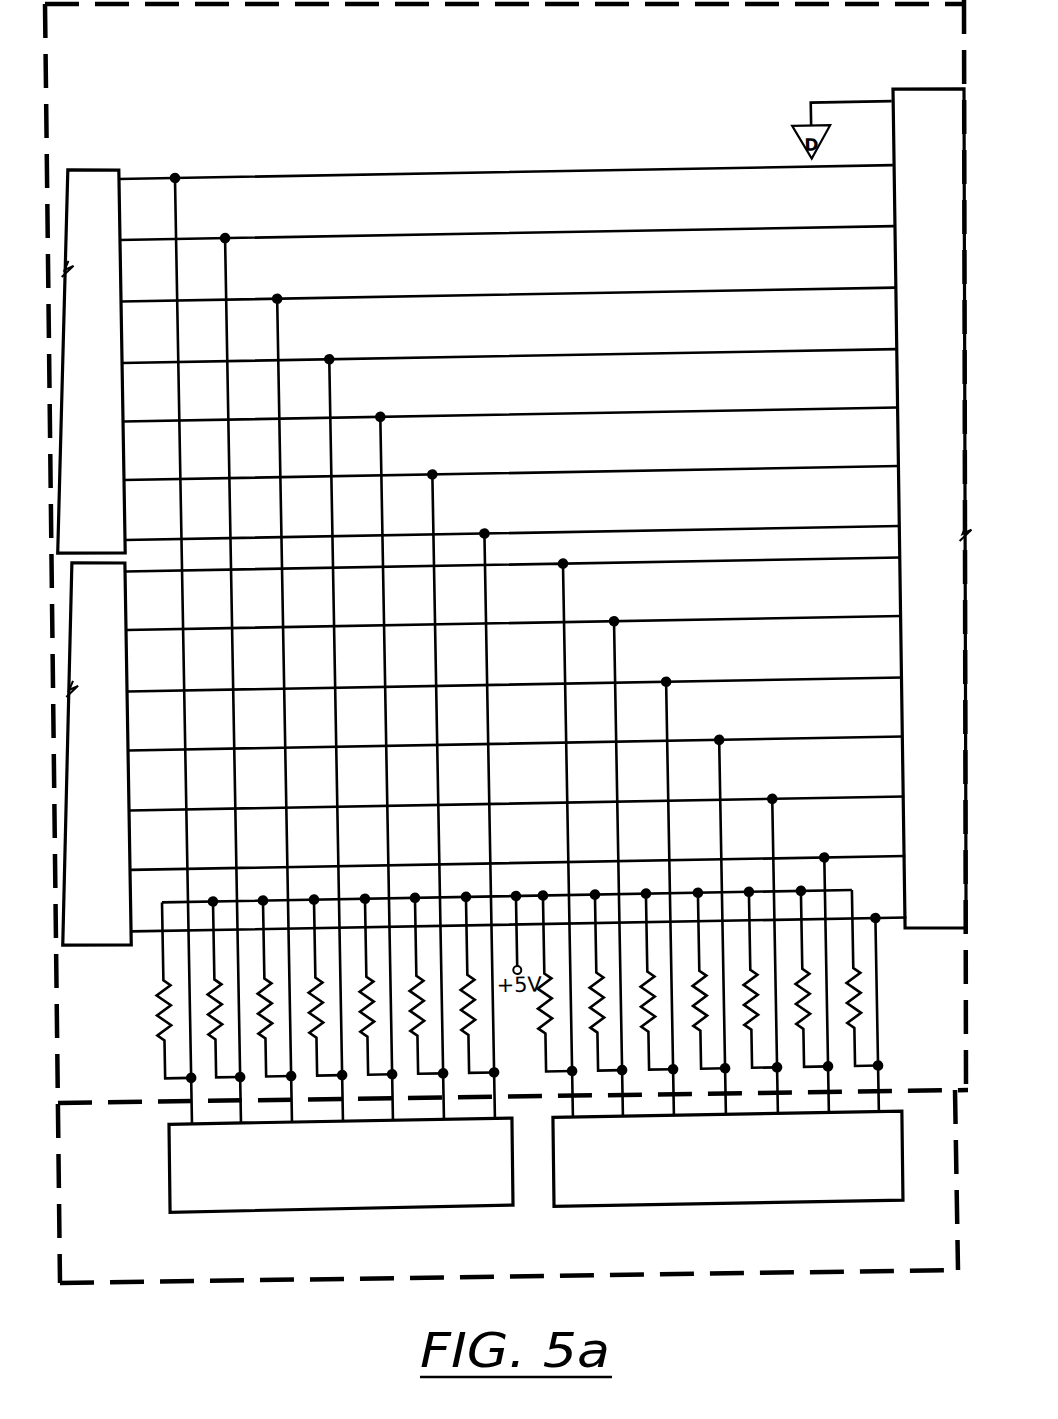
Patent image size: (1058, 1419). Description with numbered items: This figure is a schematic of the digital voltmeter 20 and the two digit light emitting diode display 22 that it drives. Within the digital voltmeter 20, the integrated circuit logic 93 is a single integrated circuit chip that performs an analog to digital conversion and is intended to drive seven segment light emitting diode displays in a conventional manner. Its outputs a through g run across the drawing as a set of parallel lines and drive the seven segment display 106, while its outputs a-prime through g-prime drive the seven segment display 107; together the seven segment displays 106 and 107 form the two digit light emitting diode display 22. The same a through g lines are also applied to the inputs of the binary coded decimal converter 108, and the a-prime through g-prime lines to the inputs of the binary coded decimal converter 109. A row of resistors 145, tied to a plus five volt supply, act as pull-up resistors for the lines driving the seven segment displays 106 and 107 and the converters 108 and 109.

The digital voltmeter 20 is at (477, 121).
The two digit light emitting diode display 22 is at (192, 1262).
The integrated circuit logic 93 is at (926, 101).
The seven segment display 106 is at (303, 1185).
The seven segment display 107 is at (690, 1185).
The binary coded decimal converter 108 is at (89, 168).
The binary coded decimal converter 109 is at (75, 944).
The pull-up resistors 145 is at (139, 1051).